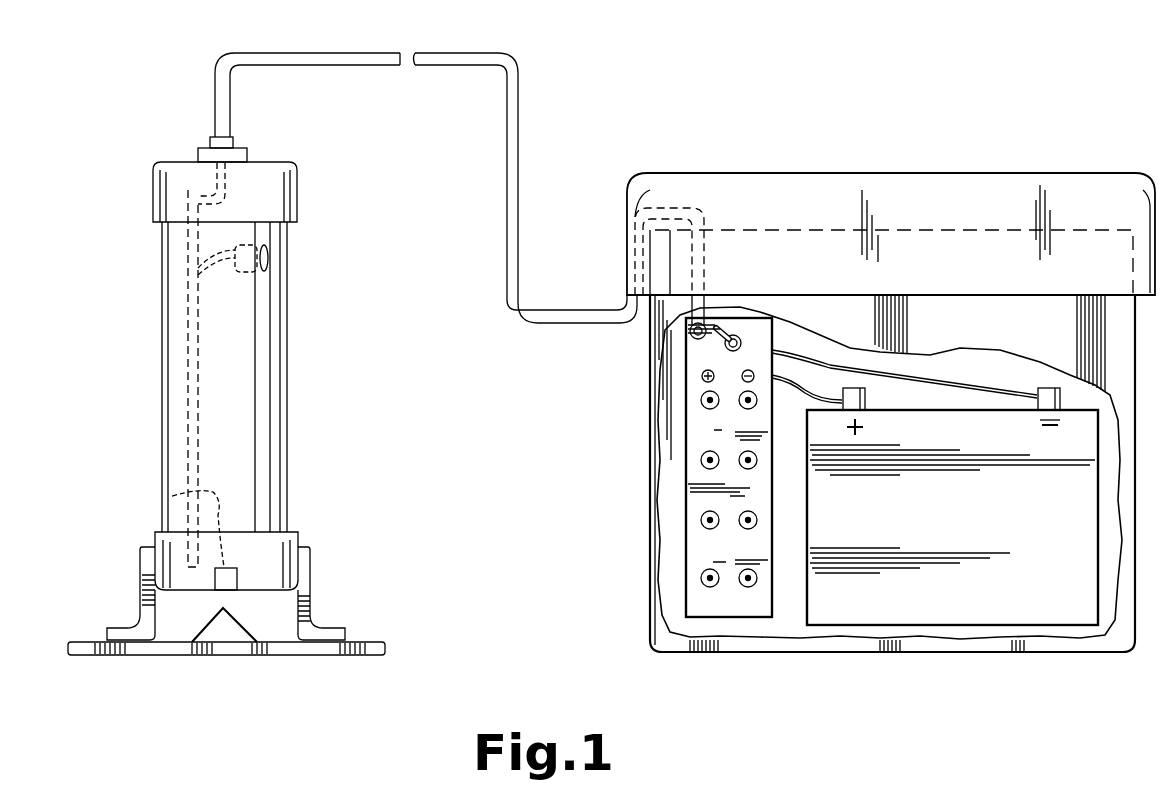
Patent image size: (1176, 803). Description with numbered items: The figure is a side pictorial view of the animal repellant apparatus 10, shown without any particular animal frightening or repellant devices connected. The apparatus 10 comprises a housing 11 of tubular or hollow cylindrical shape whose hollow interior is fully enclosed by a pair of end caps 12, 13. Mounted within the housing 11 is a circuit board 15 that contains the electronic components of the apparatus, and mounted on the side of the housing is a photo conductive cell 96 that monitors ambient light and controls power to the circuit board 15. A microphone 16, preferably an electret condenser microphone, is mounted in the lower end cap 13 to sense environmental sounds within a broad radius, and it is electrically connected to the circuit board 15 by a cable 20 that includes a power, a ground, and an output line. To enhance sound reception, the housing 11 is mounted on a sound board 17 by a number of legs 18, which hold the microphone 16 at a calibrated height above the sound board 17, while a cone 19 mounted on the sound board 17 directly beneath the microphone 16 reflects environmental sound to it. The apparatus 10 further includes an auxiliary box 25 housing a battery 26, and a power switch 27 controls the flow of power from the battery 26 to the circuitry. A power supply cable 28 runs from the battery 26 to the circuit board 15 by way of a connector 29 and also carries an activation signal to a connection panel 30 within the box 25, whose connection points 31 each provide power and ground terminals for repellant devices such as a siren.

The animal repellant apparatus 10 is at (519, 526).
The housing 11 is at (287, 338).
The end cap 12 is at (297, 184).
The end cap 13 is at (155, 535).
The circuit board 15 is at (188, 408).
The microphone 16 is at (212, 584).
The sound board 17 is at (372, 640).
The legs 18 is at (310, 560).
The cone 19 is at (212, 620).
The cable 20 is at (172, 496).
The auxiliary box 25 is at (902, 207).
The battery 26 is at (1098, 608).
The power switch 27 is at (744, 341).
The power supply cable 28 is at (354, 53).
The connector 29 is at (690, 337).
The connection panel 30 is at (686, 382).
The connection points 31 is at (700, 405).
The photo conductive cell 96 is at (270, 258).